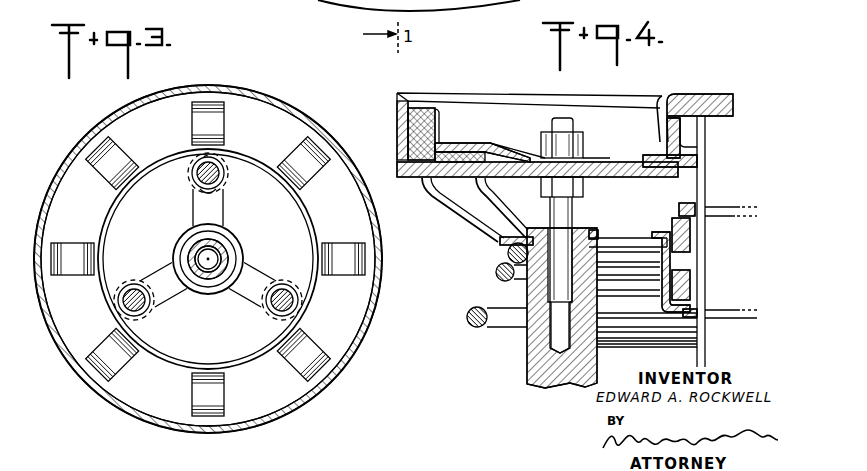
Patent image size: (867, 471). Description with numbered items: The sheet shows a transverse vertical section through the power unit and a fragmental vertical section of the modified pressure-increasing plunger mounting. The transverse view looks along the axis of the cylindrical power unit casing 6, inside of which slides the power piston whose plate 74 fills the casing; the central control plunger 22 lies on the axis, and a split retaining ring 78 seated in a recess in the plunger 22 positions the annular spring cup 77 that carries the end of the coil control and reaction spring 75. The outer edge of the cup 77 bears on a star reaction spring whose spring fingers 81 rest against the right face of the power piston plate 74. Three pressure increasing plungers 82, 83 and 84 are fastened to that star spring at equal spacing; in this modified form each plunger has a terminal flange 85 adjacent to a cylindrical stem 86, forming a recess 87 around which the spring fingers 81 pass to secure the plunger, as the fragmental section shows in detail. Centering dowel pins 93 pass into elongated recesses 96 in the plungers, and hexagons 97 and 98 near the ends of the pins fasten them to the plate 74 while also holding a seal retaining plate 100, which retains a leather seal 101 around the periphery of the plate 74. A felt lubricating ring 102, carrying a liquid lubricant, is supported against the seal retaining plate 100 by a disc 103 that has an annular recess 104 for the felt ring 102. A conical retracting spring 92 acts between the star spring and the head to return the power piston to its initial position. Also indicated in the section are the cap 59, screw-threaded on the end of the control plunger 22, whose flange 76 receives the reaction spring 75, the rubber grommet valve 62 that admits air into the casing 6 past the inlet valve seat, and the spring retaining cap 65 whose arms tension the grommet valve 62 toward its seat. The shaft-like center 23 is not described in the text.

In FIG. 3, the power unit casing 6 is at (209, 87).
In FIG. 3, the control plunger 22 is at (190, 250).
In FIG. 3, the shaft 23 is at (212, 266).
In FIG. 4, the cap 59 is at (726, 241).
In FIG. 4, the rubber grommet valve 62 is at (718, 96).
In FIG. 4, the spring retaining cap 65 is at (679, 95).
In FIG. 3, the plate 74 is at (346, 172).
In FIG. 4, the plate 74 is at (412, 179).
In FIG. 4, the coil control and reaction spring 75 is at (690, 283).
In FIG. 4, the flange 76 is at (701, 212).
In FIG. 4, the annular spring cup 77 is at (662, 255).
In FIG. 3, the split retaining ring 78 is at (226, 250).
In FIG. 4, the split retaining ring 78 is at (736, 319).
In FIG. 3, the spring fingers 81 is at (124, 150).
In FIG. 4, the spring fingers 81 is at (500, 199).
In FIG. 3, the pressure increasing plunger 82 is at (218, 164).
In FIG. 3, the pressure increasing plunger 83 is at (282, 283).
In FIG. 3, the pressure increasing plunger 84 is at (134, 283).
In FIG. 3, the terminal flange 85 is at (214, 196).
In FIG. 4, the terminal flange 85 is at (594, 230).
In FIG. 3, the cylindrical stem 86 is at (196, 178).
In FIG. 4, the cylindrical stem 86 is at (534, 352).
In FIG. 3, the recess 87 is at (195, 209).
In FIG. 4, the recess 87 is at (630, 239).
In FIG. 4, the conical retracting spring 92 is at (482, 308).
In FIG. 3, the centering dowel pin 93 is at (221, 177).
In FIG. 4, the centering dowel pin 93 is at (562, 299).
In FIG. 4, the elongated recess 96 is at (566, 340).
In FIG. 4, the hexagon 97 is at (604, 170).
In FIG. 4, the hexagon 98 is at (577, 127).
In FIG. 4, the seal retaining plate 100 is at (492, 147).
In FIG. 4, the leather seal 101 is at (400, 112).
In FIG. 4, the felt lubricating ring 102 is at (424, 108).
In FIG. 4, the disc 103 is at (458, 144).
In FIG. 4, the annular recess 104 is at (439, 125).